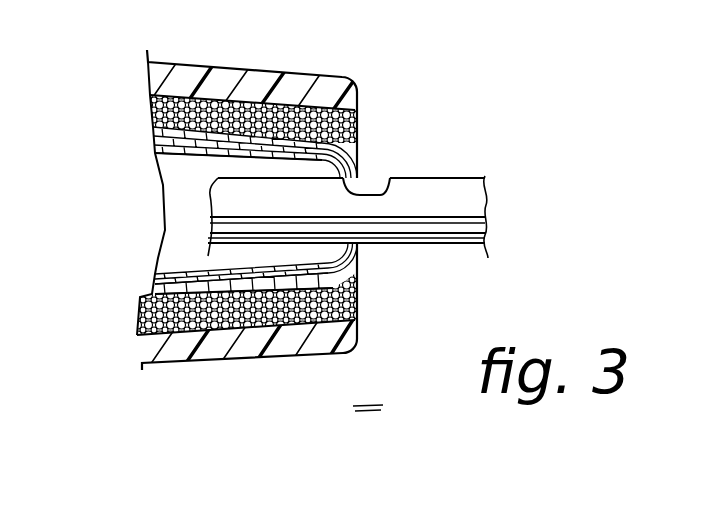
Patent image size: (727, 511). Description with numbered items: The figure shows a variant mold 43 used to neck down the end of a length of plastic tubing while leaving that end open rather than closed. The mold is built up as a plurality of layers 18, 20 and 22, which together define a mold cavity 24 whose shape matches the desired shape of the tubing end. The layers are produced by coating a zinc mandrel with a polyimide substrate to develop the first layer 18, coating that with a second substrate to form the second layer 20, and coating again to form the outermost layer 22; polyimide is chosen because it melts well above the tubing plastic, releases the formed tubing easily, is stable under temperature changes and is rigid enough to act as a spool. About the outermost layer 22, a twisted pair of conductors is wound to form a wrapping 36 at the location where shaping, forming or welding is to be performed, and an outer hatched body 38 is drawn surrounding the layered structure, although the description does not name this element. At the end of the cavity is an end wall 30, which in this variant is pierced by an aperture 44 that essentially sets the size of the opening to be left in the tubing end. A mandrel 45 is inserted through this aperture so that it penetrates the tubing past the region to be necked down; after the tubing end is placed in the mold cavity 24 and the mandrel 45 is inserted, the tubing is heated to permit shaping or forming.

The layer 18 is at (152, 283).
The second layer 20 is at (153, 289).
The outermost layer 22 is at (143, 315).
The mold cavity 24 is at (220, 163).
The end wall 30 is at (358, 156).
The wrapping 36 is at (165, 108).
The outer housing wall 38 is at (285, 80).
The variant mold 43 is at (369, 395).
The aperture 44 is at (378, 191).
The mandrel 45 is at (412, 242).